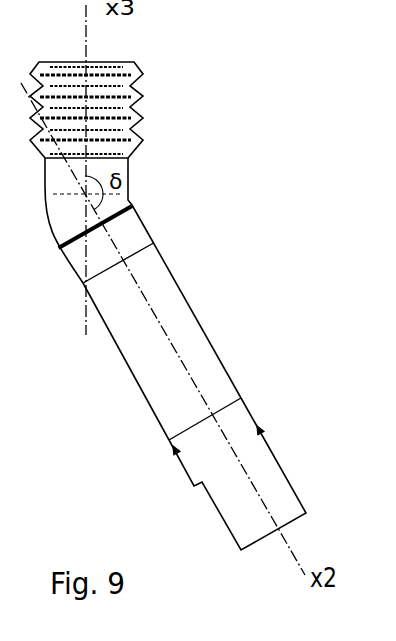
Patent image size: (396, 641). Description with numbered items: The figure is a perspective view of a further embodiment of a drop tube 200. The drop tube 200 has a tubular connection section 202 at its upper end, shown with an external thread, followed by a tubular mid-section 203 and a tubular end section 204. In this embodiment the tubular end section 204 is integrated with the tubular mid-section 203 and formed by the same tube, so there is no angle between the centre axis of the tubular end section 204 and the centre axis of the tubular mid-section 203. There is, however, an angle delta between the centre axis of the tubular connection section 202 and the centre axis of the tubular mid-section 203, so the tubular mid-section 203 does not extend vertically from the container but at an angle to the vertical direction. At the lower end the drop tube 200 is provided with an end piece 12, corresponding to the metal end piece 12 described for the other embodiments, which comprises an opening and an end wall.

The drop tube 200 is at (197, 280).
The tubular connection section 202 is at (137, 92).
The tubular mid-section 203 is at (107, 304).
The tubular end section 204 is at (174, 419).
The end piece 12 is at (260, 458).